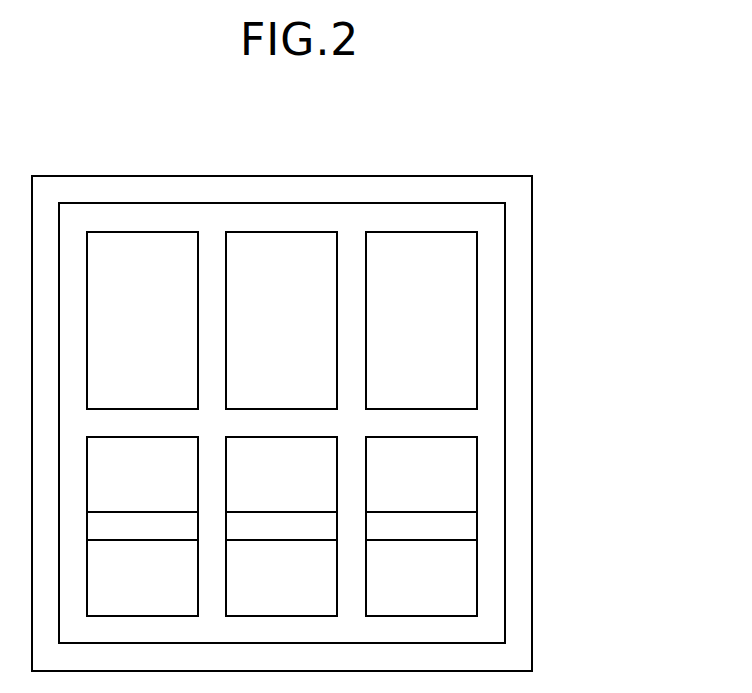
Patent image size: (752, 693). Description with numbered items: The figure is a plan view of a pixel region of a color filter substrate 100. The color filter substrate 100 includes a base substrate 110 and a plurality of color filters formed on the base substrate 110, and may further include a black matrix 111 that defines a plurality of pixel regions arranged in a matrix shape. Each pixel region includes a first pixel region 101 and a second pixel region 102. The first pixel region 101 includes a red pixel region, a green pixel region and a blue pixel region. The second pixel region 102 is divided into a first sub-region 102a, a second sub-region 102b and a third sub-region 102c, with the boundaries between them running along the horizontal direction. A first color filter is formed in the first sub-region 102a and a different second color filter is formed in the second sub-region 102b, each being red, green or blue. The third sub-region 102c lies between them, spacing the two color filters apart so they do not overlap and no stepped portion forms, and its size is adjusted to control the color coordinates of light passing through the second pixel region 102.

The color filter substrate 100 is at (371, 389).
The base substrate 110 is at (518, 317).
The black matrix 111 is at (493, 222).
The first pixel region 101 is at (141, 240).
The second pixel region 102 is at (399, 526).
The first sub-region 102a is at (466, 491).
The third sub-region 102c is at (466, 530).
The second sub-region 102b is at (466, 565).